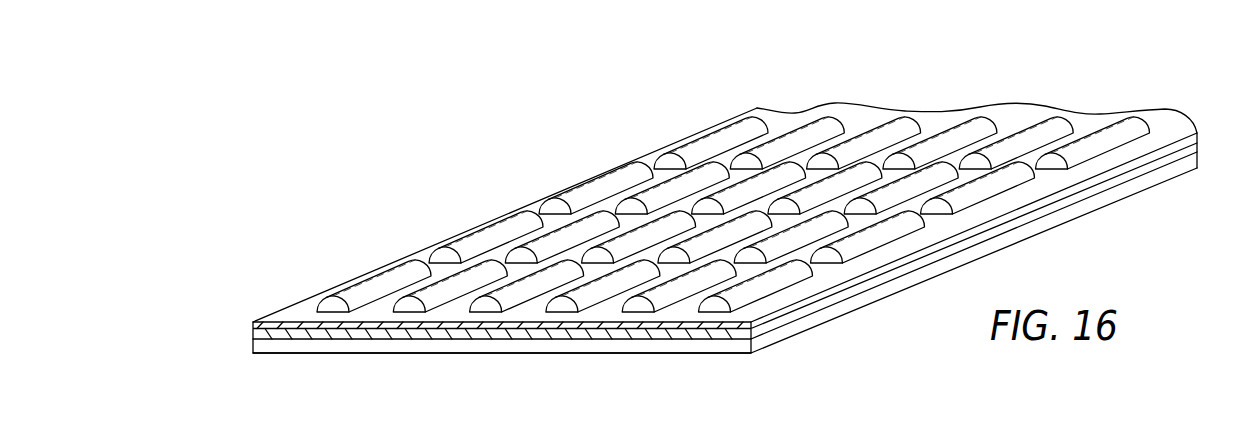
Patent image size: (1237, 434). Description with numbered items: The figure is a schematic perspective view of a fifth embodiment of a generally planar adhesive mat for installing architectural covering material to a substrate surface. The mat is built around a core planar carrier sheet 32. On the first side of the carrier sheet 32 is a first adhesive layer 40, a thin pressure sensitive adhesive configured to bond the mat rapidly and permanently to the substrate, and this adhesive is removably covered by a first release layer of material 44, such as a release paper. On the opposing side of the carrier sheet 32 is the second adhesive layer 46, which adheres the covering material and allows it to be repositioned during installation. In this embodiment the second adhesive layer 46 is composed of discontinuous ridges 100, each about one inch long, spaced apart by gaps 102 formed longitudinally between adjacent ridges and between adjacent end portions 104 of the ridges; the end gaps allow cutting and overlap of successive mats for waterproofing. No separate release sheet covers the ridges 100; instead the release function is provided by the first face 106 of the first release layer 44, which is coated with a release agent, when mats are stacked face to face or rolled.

The discontinuous ridges 100 is at (346, 282).
The gaps 102 is at (433, 266).
The end portions of the ridges 104 is at (557, 208).
The second adhesive layer 46 is at (253, 297).
The carrier sheet 32 is at (253, 322).
The first adhesive layer 40 is at (253, 339).
The first release layer of material 44 is at (502, 353).
The first face of the first release layer 106 is at (600, 353).